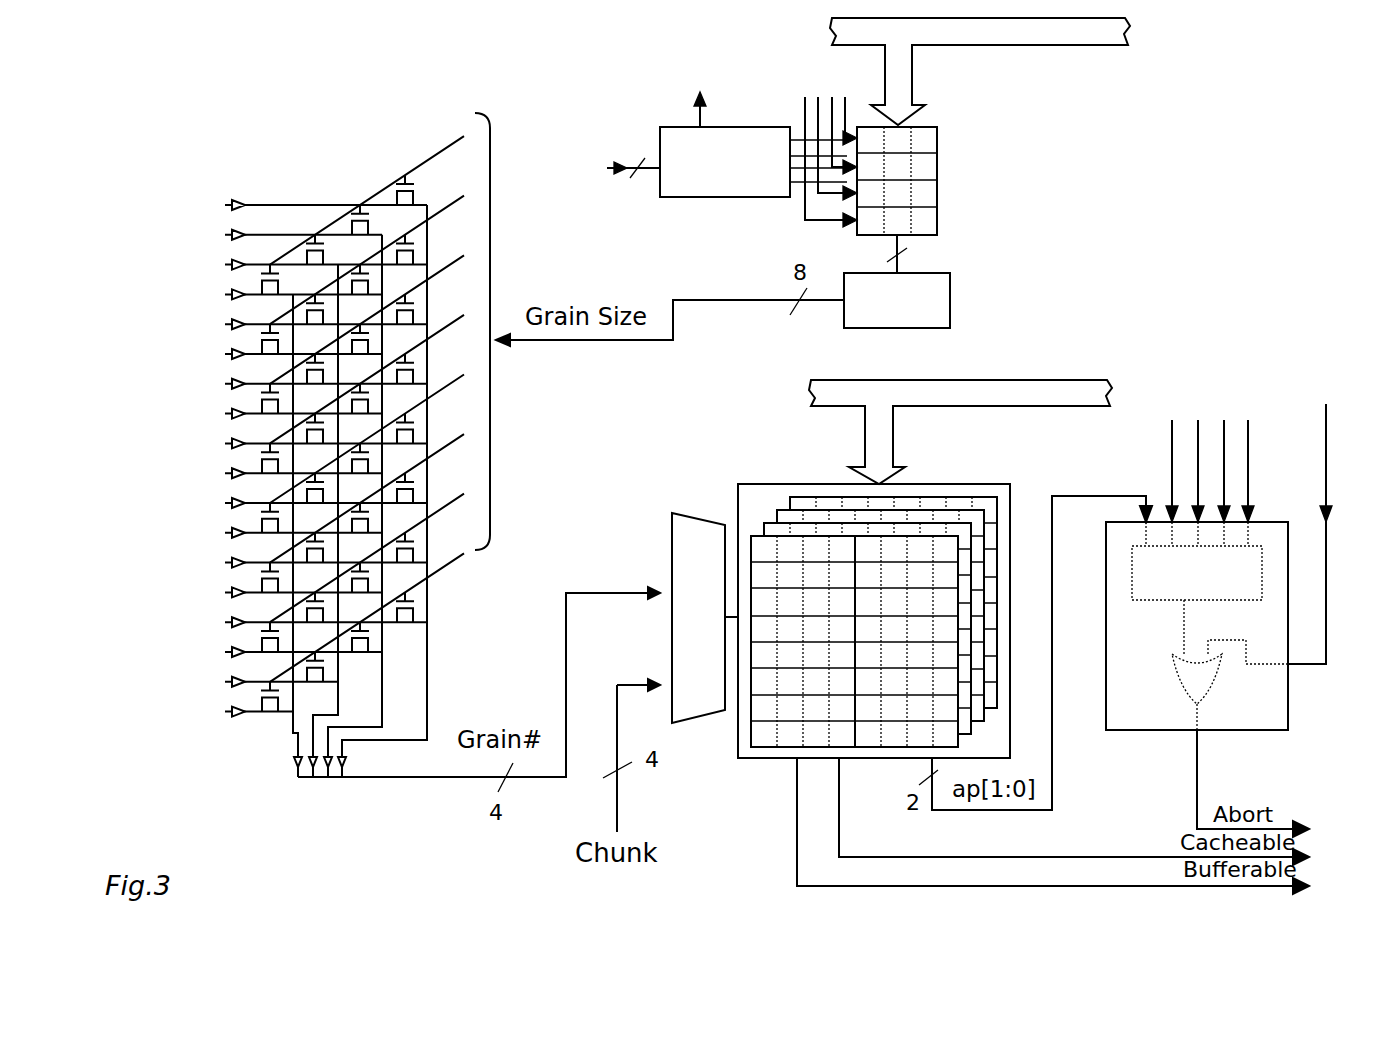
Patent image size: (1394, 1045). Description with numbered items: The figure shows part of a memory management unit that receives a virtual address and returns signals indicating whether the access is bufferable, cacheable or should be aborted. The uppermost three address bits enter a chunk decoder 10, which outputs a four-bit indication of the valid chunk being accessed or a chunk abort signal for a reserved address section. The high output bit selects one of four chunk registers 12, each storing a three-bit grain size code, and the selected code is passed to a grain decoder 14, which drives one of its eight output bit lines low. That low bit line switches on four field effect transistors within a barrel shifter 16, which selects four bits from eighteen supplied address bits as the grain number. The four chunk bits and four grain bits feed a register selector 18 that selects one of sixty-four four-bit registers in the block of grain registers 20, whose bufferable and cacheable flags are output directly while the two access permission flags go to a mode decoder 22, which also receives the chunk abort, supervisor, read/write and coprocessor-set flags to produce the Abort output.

The chunk decoder 10 is at (738, 197).
The chunk registers 12 is at (937, 150).
The grain decoder 14 is at (950, 308).
The barrel shifter 16 is at (306, 181).
The register selector 18 is at (672, 550).
The block of grain registers 20 is at (820, 484).
The mode decoder 22 is at (1288, 692).